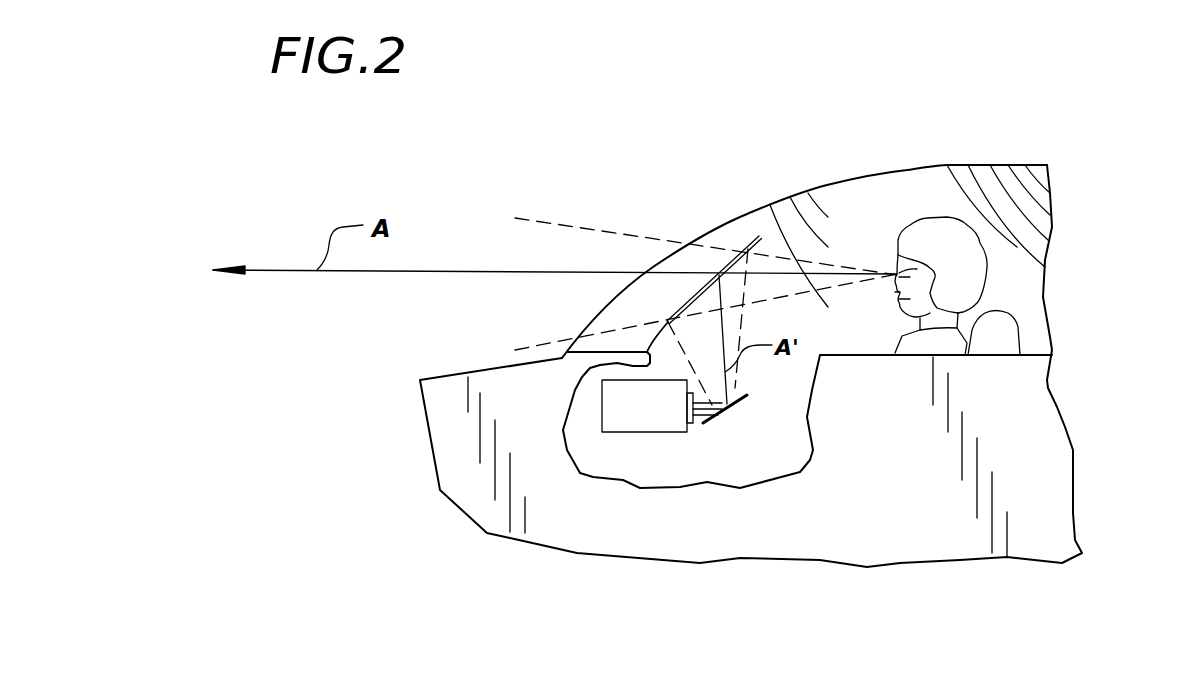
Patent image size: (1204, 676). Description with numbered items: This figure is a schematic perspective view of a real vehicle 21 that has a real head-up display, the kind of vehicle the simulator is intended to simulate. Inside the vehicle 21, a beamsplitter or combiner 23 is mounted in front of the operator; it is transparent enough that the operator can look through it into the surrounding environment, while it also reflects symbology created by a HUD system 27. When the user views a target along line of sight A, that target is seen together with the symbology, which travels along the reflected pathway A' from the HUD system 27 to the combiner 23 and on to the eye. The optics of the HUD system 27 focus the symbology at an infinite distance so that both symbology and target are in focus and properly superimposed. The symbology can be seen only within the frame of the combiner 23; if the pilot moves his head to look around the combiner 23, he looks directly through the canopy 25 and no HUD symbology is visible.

The vehicle 21 is at (1086, 400).
The combiner 23 is at (742, 252).
The canopy 25 is at (907, 170).
The HUD system 27 is at (768, 428).